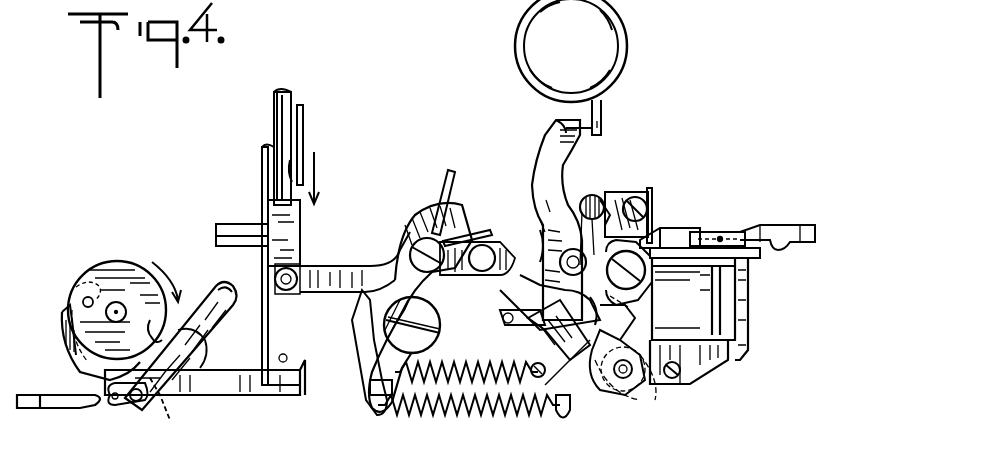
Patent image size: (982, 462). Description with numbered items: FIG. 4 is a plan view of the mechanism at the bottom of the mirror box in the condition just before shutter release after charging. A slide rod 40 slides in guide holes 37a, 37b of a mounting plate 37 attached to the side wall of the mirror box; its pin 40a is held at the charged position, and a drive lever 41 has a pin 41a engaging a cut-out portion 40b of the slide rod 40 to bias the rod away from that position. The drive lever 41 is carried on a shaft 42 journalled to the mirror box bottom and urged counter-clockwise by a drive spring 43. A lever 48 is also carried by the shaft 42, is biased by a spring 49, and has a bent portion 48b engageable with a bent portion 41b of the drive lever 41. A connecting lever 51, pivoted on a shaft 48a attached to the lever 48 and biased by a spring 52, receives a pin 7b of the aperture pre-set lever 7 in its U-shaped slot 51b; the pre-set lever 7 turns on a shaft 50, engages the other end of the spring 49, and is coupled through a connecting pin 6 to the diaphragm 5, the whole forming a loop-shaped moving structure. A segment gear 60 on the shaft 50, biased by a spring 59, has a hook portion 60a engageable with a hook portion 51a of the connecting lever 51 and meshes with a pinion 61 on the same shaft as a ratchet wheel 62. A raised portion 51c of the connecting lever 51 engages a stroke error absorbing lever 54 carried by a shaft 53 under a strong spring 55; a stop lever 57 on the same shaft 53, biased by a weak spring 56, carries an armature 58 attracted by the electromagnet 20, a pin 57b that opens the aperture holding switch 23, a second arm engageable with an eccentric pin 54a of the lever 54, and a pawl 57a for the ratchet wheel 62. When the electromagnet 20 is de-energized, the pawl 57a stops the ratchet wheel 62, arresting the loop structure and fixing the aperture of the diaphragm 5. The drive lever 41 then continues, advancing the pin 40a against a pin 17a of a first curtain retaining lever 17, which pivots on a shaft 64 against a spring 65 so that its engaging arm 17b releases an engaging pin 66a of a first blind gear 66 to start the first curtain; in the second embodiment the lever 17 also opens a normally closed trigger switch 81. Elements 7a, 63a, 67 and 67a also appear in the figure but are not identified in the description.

The diaphragm 5 is at (626, 55).
The connecting pin 6 is at (603, 110).
The aperture pre-set lever 7 is at (550, 138).
The lever upper end 7a is at (556, 125).
The pin 7b is at (540, 235).
The electromagnet 20 is at (748, 300).
The aperture holding switch 23 is at (795, 225).
The mounting plate 37 is at (303, 115).
The guide hole 37a is at (294, 165).
The guide hole 37b is at (283, 365).
The slide rod 40 is at (274, 105).
The pin 40a is at (232, 224).
The cut-out portion 40b is at (300, 240).
The drive lever 41 is at (375, 262).
The pin 41a is at (292, 275).
The bent portion 41b is at (446, 172).
The shaft 42 is at (385, 322).
The drive spring 43 is at (442, 368).
The lever 48 is at (398, 282).
The shaft 48a is at (420, 238).
The bent portion 48b is at (472, 235).
The spring 49 is at (405, 412).
The shaft 50 is at (552, 340).
The connecting lever 51 is at (505, 285).
The hook portion 51a is at (585, 298).
The U-shaped slot 51b is at (560, 260).
The raised portion 51c is at (608, 205).
The spring 52 is at (488, 243).
The shaft 53 is at (645, 273).
The stroke error absorbing lever 54 is at (635, 192).
The eccentric pin 54a is at (642, 203).
The spring 55 is at (652, 200).
The spring 56 is at (592, 195).
The stop lever 57 is at (665, 228).
The pawl 57a is at (545, 385).
The pin 57b is at (720, 232).
The armature 58 is at (752, 258).
The spring 59 is at (635, 312).
The segment gear 60 is at (590, 385).
The hook portion 60a is at (505, 312).
The pinion 61 is at (652, 400).
The ratchet wheel 62 is at (615, 395).
The base plate 63a is at (215, 385).
The shaft 64 is at (138, 400).
The spring 65 is at (165, 415).
The first blind gear 66 is at (140, 262).
The engaging pin 66a is at (160, 268).
The cam follower 67 is at (108, 262).
The pin 67a is at (83, 298).
The first curtain retaining lever 17 is at (200, 345).
The pin 17a is at (228, 292).
The engaging arm 17b is at (205, 345).
The trigger switch 81 is at (40, 395).